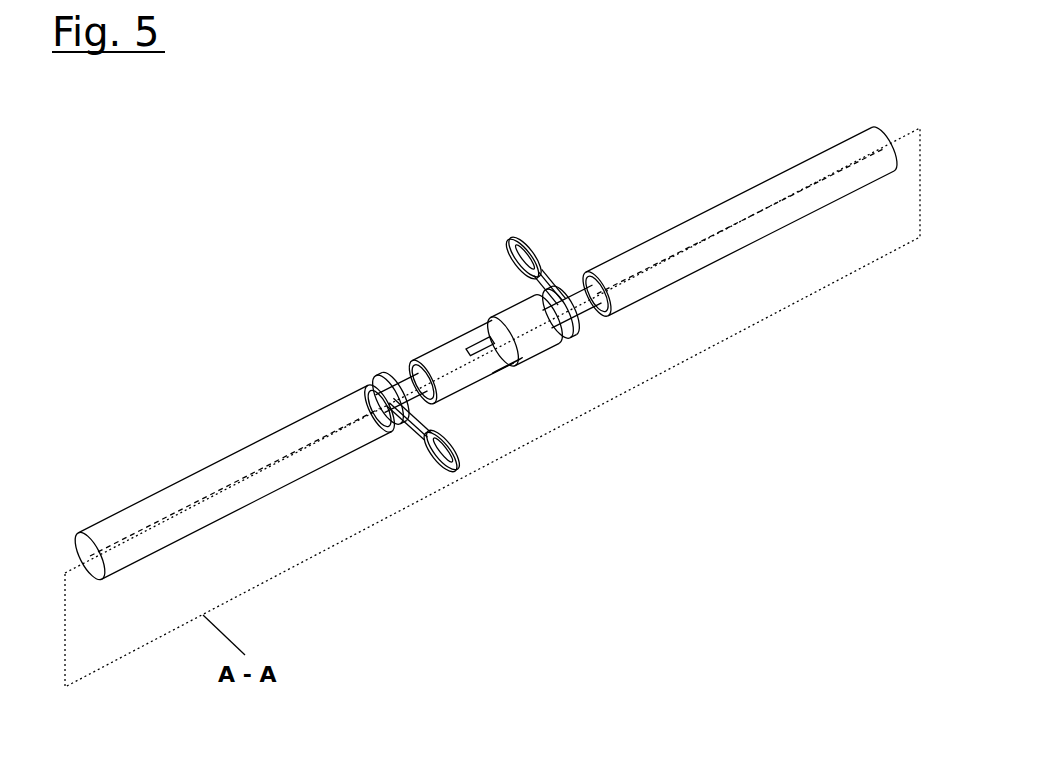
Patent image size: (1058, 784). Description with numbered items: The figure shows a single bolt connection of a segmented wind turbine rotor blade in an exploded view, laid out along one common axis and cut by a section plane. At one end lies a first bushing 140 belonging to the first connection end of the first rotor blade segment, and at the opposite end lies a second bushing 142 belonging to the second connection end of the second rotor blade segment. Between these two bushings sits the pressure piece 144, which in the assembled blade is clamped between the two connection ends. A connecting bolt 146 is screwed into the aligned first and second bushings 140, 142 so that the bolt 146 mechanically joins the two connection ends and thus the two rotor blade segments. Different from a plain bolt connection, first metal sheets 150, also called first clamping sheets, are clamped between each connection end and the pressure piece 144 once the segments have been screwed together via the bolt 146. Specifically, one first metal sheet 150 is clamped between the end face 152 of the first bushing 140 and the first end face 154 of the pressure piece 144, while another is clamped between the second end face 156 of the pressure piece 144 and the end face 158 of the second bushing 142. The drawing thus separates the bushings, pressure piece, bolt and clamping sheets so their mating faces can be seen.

The first bushings 140 is at (290, 437).
The second bushings 142 is at (718, 248).
The pressure piece 144 is at (488, 362).
The connecting bolt 146 is at (382, 374).
The first metal sheets 150 is at (540, 282).
The end faces of the first bushings 152 is at (397, 427).
The first end faces of the pressure pieces 154 is at (432, 405).
The second end faces of the pressure pieces 156 is at (560, 337).
The end faces of the second bushings 158 is at (612, 315).